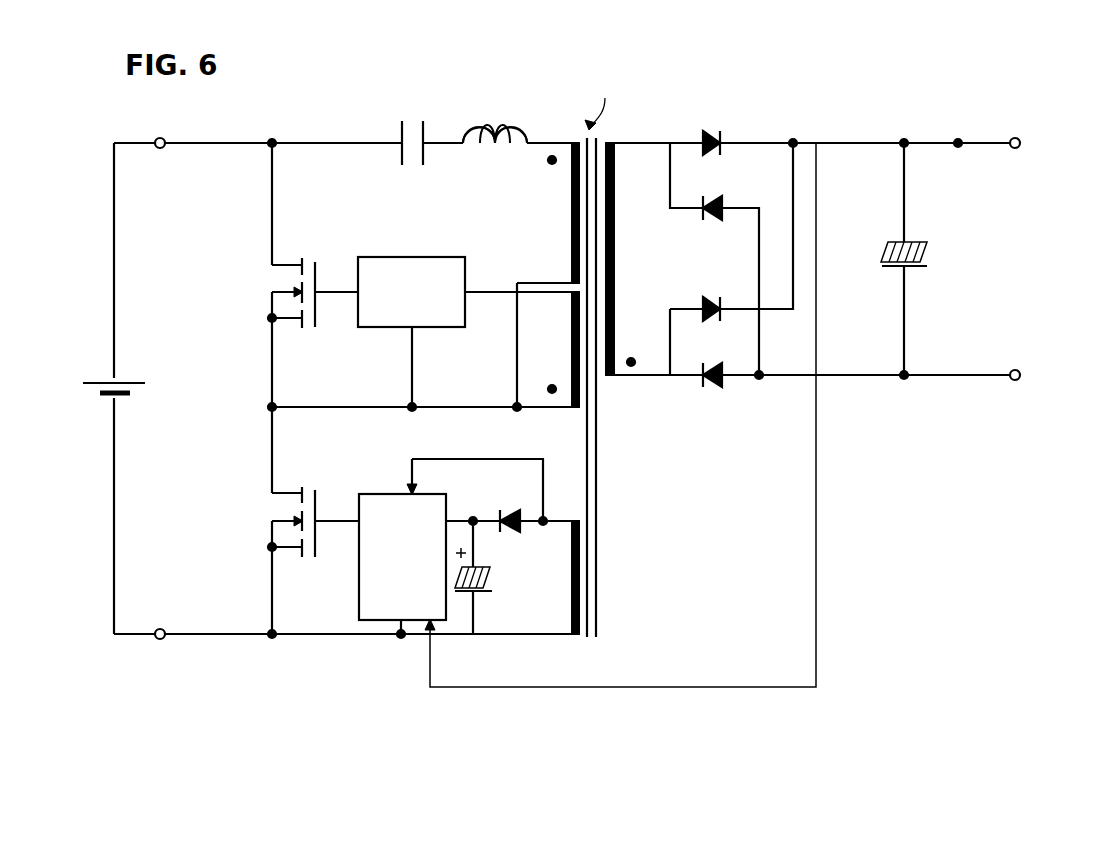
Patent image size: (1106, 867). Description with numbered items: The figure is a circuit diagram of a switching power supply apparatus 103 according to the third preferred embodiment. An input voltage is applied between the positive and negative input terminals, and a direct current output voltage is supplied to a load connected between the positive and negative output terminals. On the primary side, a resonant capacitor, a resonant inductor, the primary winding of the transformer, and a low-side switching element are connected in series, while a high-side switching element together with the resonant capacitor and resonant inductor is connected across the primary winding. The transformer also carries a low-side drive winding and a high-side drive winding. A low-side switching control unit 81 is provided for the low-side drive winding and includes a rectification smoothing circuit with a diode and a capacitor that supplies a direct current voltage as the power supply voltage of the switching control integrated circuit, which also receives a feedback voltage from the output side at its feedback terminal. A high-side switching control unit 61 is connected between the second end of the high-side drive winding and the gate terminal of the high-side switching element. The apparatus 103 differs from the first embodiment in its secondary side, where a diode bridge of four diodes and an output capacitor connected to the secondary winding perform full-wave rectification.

The switching power supply apparatus 103 is at (1094, 56).
The high-side switching control unit 61 is at (410, 257).
The low-side switching control unit 81 is at (360, 620).